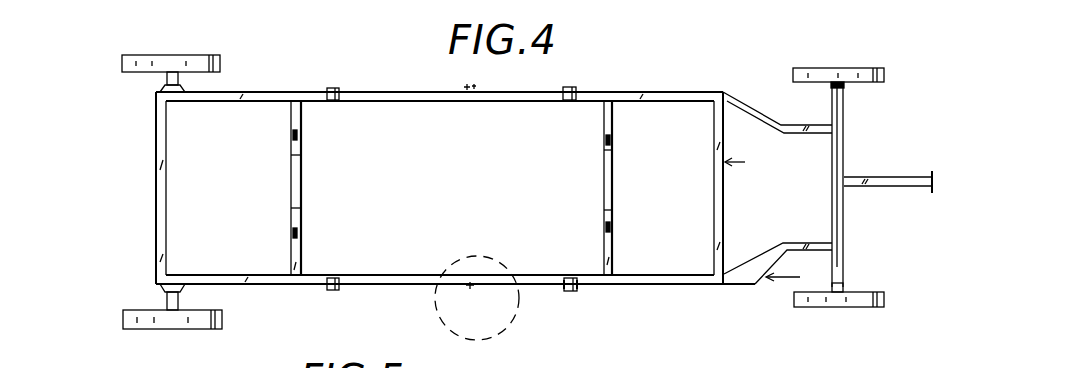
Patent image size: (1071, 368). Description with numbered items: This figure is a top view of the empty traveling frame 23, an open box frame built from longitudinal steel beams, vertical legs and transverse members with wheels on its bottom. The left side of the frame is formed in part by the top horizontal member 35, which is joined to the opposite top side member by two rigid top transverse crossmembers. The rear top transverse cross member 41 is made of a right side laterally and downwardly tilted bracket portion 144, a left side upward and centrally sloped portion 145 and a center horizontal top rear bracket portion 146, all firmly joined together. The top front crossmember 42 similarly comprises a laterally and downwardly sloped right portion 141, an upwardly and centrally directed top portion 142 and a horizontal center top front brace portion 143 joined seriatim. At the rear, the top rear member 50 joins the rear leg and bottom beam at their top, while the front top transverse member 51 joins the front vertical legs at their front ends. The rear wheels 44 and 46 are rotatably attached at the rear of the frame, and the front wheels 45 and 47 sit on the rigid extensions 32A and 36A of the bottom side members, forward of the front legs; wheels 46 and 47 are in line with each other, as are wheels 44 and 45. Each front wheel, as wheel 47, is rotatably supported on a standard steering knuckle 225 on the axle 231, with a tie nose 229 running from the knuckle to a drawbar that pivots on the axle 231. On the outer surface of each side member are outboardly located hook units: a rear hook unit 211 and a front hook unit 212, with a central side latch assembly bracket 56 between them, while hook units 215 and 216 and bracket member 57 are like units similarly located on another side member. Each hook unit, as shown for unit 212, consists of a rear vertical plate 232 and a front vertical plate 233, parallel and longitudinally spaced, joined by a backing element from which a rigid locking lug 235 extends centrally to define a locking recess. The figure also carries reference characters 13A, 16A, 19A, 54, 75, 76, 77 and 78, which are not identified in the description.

The region of bottom rail bracket 13A is at (435, 296).
The direction arrow 16A is at (783, 284).
The direction arrow 19A is at (746, 153).
The traveling frame 23 is at (674, 91).
The rigid extension 32A is at (764, 263).
The top horizontal member 35 is at (407, 91).
The rigid extension 36A is at (781, 122).
The rear top transverse cross member 41 is at (328, 188).
The top front crossmember 42 is at (579, 188).
The rear wheel 44 is at (172, 323).
The front wheel 45 is at (873, 306).
The rear wheel 46 is at (176, 62).
The front wheel 47 is at (849, 70).
The top rear member 50 is at (158, 212).
The front top transverse member 51 is at (717, 192).
The cross member 54 is at (921, 171).
The side latch assembly bracket 56 is at (471, 290).
The bracket member 57 is at (478, 75).
The clip 75 is at (293, 233).
The clip 76 is at (293, 135).
The clip 77 is at (614, 232).
The clip 78 is at (612, 138).
The laterally and downwardly sloped right portion 141 is at (604, 252).
The upwardly and centrally directed top portion 142 is at (604, 123).
The horizontal center top front brace portion 143 is at (604, 195).
The right side laterally and downwardly tilted bracket portion 144 is at (302, 255).
The left side upward and centrally sloped portion 145 is at (301, 122).
The center horizontal top rear bracket portion 146 is at (299, 187).
The rear hook unit 211 is at (333, 290).
The front hook unit 212 is at (582, 314).
The hook unit 215 is at (333, 88).
The hook unit 216 is at (571, 87).
The steering knuckle 225 is at (843, 88).
The tie nose 229 is at (846, 149).
The axle 231 is at (792, 231).
The rear vertical plate 232 is at (564, 287).
The front vertical plate 233 is at (607, 299).
The locking lug 235 is at (572, 291).